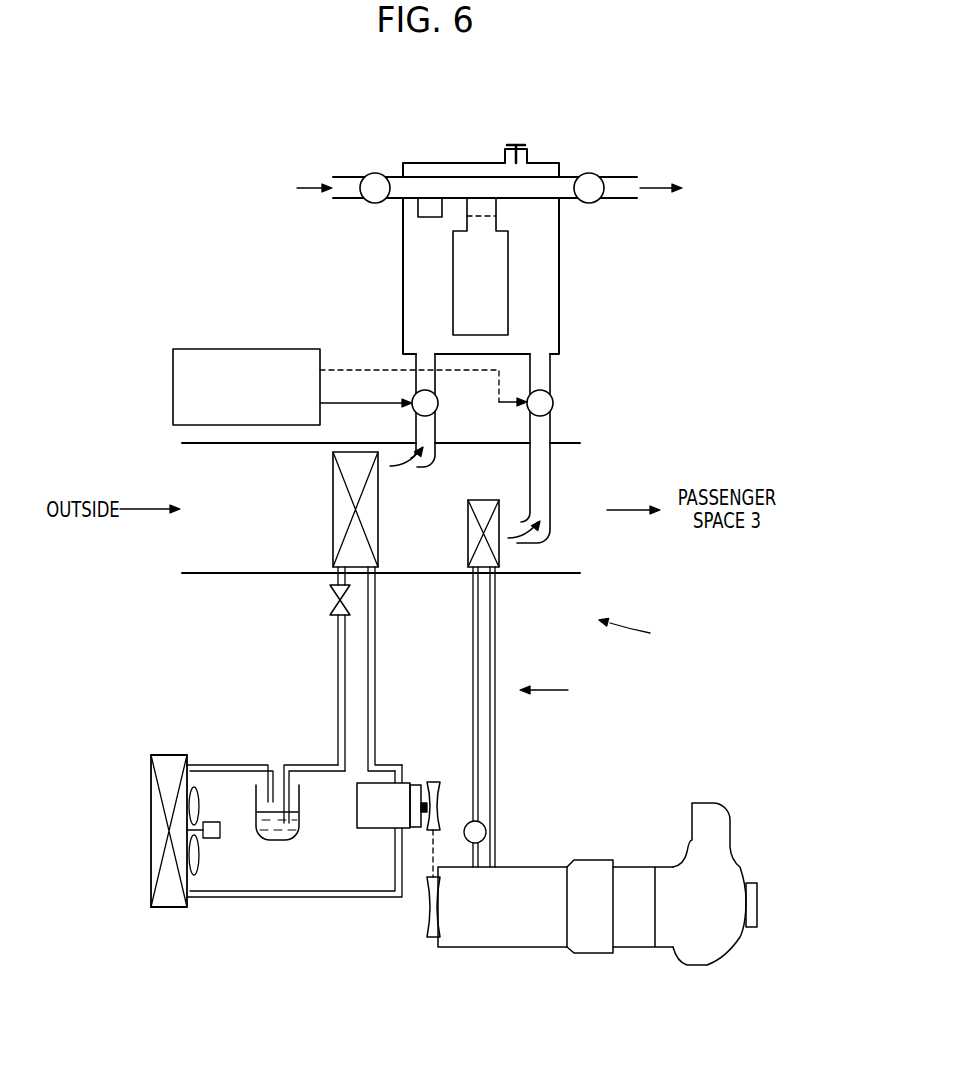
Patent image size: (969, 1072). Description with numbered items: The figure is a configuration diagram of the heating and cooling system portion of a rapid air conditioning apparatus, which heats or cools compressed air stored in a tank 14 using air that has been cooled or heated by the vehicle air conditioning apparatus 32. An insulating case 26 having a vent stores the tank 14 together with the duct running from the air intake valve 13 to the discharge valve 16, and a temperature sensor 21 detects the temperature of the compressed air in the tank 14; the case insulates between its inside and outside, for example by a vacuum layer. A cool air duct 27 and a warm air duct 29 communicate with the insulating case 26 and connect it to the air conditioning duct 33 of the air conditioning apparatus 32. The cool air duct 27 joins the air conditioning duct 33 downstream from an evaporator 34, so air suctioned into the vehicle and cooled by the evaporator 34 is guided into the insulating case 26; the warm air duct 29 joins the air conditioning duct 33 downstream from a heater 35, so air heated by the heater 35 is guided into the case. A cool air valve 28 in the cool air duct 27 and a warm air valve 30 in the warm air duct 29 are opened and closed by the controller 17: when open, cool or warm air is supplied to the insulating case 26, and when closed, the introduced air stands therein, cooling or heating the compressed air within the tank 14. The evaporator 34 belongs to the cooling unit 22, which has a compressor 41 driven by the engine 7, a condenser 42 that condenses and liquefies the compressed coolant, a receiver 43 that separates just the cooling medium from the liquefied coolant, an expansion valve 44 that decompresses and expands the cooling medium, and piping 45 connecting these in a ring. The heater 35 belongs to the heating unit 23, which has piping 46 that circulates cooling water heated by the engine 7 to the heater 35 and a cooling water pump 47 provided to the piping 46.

The engine 7 is at (505, 950).
The air intake valve 13 is at (376, 172).
The tank 14 is at (508, 265).
The discharge valve 16 is at (588, 172).
The controller 17 is at (250, 348).
The temperature sensor 21 is at (428, 219).
The cooling unit 22 is at (226, 752).
The heating unit 23 is at (555, 690).
The insulating case 26 is at (559, 303).
The cool air duct 27 is at (437, 416).
The cool air valve 28 is at (438, 400).
The warm air duct 29 is at (552, 416).
The warm air valve 30 is at (553, 400).
The air conditioning apparatus 32 is at (637, 634).
The air conditioning duct 33 is at (558, 577).
The evaporator 34 is at (378, 498).
The heater 35 is at (468, 546).
The compressor 41 is at (370, 830).
The condenser 42 is at (172, 909).
The receiver 43 is at (283, 842).
The expansion valve 44 is at (330, 600).
The piping 45 is at (376, 685).
The piping 46 is at (496, 775).
The cooling water pump 47 is at (462, 820).